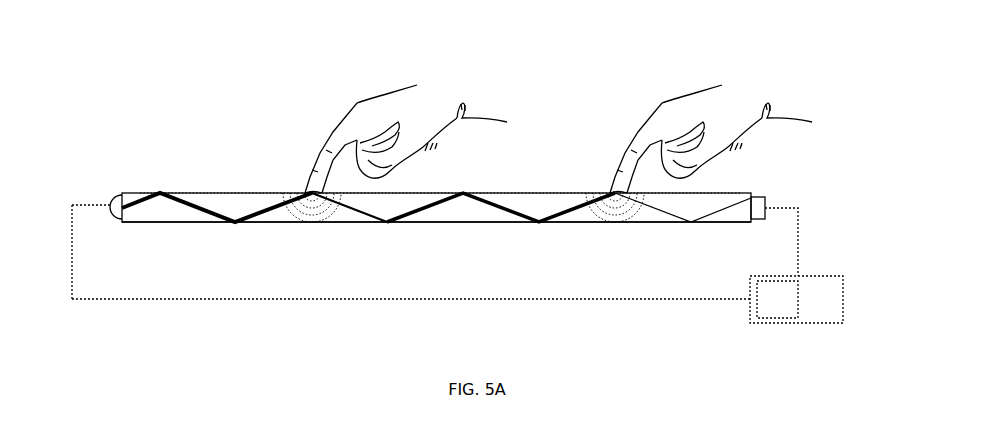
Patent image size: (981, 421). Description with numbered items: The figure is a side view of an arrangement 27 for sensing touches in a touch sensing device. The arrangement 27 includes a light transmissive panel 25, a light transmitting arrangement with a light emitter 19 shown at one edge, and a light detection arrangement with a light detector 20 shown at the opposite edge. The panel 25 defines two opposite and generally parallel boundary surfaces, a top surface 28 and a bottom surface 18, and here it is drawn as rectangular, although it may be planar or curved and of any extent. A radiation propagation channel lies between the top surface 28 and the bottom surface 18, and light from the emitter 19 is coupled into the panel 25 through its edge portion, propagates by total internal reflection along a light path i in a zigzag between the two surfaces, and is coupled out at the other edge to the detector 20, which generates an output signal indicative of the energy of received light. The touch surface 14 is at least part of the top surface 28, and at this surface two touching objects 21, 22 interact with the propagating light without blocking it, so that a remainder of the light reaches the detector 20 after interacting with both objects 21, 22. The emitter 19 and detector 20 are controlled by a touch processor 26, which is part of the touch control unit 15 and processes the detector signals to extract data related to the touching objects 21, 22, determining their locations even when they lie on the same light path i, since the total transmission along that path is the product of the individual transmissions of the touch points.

The touch surface 14 is at (188, 192).
The touch control unit 15 is at (796, 299).
The bottom surface 18 is at (135, 223).
The light emitter 19 is at (110, 202).
The light detector 20 is at (757, 205).
The touching object 21 is at (345, 133).
The touching object 22 is at (643, 137).
The light transmissive panel 25 is at (168, 215).
The touch processor 26 is at (777, 299).
The arrangement for sensing touches 27 is at (145, 123).
The top surface 28 is at (233, 192).
The light path i is at (507, 198).